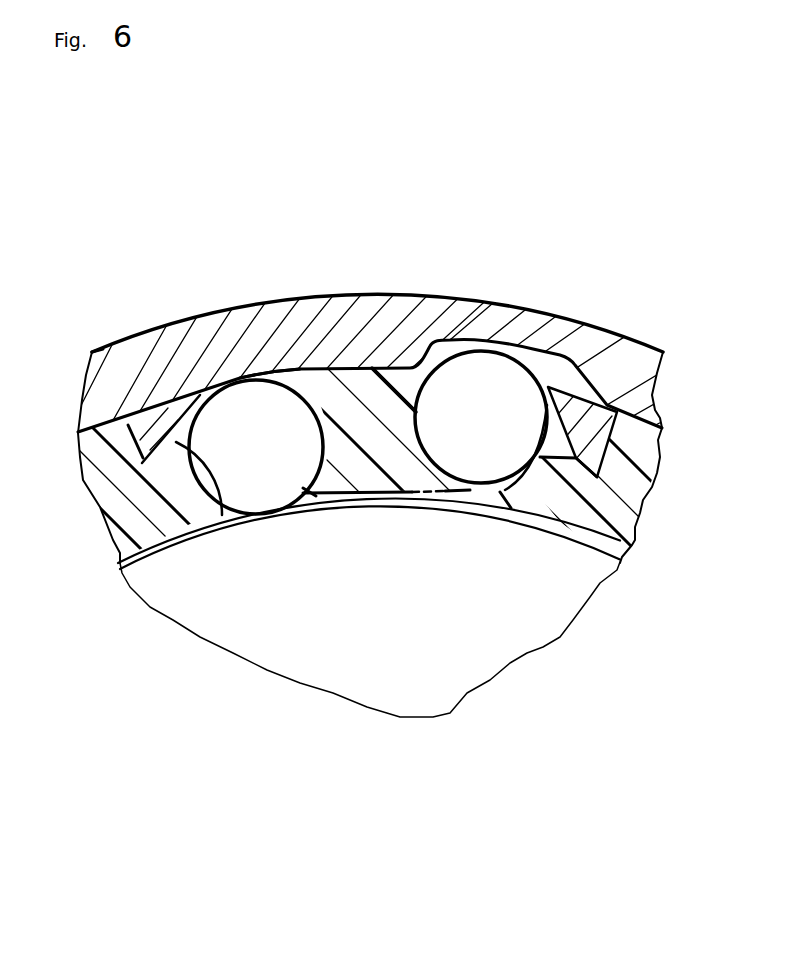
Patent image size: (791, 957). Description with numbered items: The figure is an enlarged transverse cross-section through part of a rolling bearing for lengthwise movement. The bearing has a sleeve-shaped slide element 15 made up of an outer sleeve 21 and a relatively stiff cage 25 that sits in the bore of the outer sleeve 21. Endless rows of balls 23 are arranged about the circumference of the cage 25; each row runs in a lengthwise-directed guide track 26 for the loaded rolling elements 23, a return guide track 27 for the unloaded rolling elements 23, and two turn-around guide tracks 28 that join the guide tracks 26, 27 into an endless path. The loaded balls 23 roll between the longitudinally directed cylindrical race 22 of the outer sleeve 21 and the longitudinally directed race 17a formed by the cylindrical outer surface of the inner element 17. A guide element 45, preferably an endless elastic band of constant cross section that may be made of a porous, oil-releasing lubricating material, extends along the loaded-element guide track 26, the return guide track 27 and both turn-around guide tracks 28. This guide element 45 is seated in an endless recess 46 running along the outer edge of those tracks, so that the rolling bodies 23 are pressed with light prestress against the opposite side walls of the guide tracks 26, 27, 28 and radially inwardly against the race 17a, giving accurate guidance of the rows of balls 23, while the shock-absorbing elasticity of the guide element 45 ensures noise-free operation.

The slide element 15 is at (494, 295).
The inner element 17 is at (329, 605).
The race 17a is at (197, 521).
The outer sleeve 21 is at (603, 348).
The cylindrical race 22 is at (247, 388).
The balls 23 is at (228, 413).
The cage 25 is at (353, 400).
The guide track for loaded rolling elements 26 is at (313, 400).
The return guide track 27 is at (421, 378).
The turn-around guide tracks 28 is at (431, 494).
The guide element 45 is at (178, 410).
The endless recess 46 is at (572, 460).